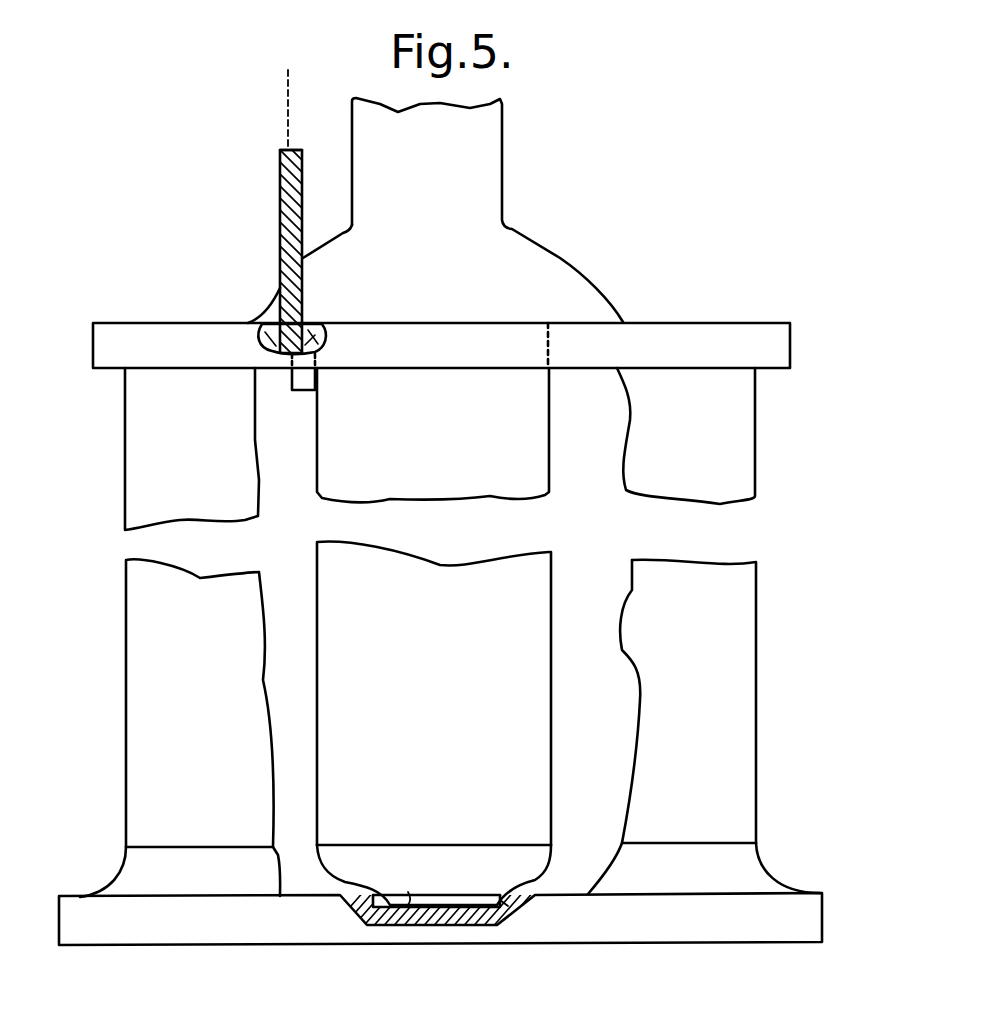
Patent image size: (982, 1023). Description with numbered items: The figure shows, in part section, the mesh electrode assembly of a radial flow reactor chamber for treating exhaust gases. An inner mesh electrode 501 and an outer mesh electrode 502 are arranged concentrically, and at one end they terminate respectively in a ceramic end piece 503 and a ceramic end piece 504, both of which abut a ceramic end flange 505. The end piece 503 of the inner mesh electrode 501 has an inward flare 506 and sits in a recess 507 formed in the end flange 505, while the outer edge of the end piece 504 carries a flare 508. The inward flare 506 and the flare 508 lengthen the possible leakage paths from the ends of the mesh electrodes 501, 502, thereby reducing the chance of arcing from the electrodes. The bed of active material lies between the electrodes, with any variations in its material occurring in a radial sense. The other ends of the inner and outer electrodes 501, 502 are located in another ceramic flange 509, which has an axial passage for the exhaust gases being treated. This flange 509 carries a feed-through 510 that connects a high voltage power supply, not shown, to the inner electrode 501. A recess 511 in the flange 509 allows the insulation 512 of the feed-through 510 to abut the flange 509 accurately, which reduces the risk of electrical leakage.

The inner mesh electrode 501 is at (434, 723).
The outer mesh electrode 502 is at (742, 778).
The ceramic end piece 503 is at (400, 915).
The ceramic end piece 504 is at (747, 872).
The ceramic end flange 505 is at (752, 928).
The inward flare 506 is at (328, 864).
The recess 507 is at (512, 903).
The flare 508 is at (112, 870).
The ceramic flange 509 is at (782, 337).
The feed-through 510 is at (280, 245).
The recess 511 is at (258, 330).
The insulation 512 is at (280, 165).